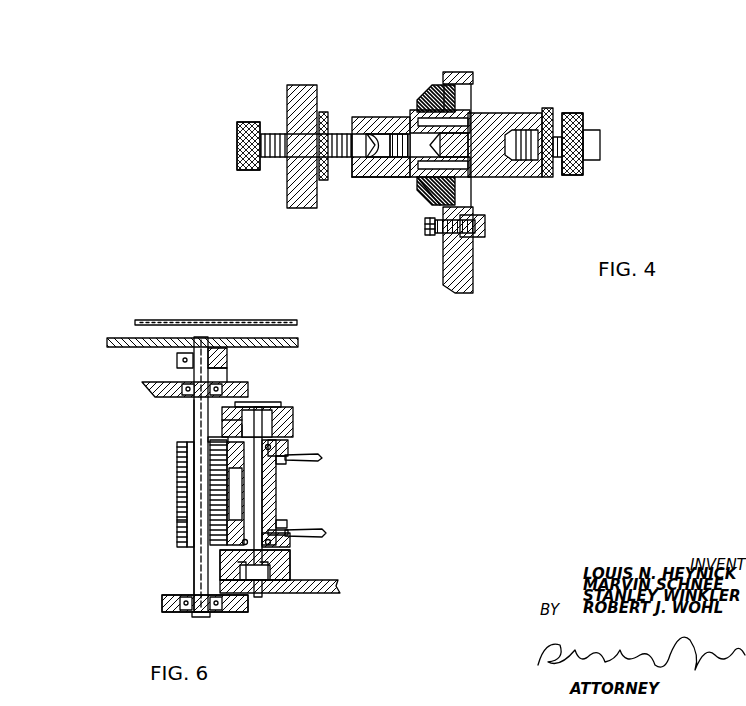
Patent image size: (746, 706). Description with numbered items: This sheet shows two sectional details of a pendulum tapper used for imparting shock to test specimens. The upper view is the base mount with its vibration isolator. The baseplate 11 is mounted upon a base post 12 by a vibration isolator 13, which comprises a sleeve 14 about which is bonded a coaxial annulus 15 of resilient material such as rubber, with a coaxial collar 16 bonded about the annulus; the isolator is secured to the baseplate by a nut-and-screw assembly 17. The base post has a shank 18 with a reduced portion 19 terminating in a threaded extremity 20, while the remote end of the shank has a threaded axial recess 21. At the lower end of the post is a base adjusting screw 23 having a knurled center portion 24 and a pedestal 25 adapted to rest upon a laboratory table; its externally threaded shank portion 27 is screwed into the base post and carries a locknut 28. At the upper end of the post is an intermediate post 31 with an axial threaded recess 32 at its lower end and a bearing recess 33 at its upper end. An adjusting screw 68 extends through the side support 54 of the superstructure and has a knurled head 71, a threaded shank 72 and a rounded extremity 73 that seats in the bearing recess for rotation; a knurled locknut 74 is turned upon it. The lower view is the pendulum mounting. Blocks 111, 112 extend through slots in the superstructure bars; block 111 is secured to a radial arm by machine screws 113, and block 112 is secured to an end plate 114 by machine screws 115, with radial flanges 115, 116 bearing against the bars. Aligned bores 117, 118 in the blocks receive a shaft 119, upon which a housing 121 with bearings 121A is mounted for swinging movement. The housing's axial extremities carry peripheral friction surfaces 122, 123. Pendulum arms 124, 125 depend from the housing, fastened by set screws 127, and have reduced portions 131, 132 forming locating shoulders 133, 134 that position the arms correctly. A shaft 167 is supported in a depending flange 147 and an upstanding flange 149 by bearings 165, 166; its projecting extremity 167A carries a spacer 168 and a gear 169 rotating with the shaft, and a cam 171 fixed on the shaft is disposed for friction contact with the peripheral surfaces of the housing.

In FIG. 4, the baseplate 11 is at (458, 284).
In FIG. 4, the base post 12 is at (495, 130).
In FIG. 4, the vibration isolator 13 is at (425, 110).
In FIG. 4, the sleeve 14 is at (412, 125).
In FIG. 4, the annulus 15 is at (428, 200).
In FIG. 4, the collar 16 is at (432, 87).
In FIG. 4, the nut-and-screw assembly 17 is at (430, 236).
In FIG. 4, the shank 18 is at (545, 115).
In FIG. 4, the reduced portion 19 is at (478, 110).
In FIG. 4, the threaded extremity 20 is at (398, 158).
In FIG. 4, the threaded axial recess 21 is at (518, 172).
In FIG. 4, the base adjusting screw 23 is at (572, 176).
In FIG. 4, the knurled center portion 24 is at (583, 115).
In FIG. 4, the pedestal 25 is at (602, 145).
In FIG. 4, the shank portion 27 is at (532, 175).
In FIG. 4, the locknut 28 is at (568, 112).
In FIG. 4, the intermediate post 31 is at (372, 178).
In FIG. 4, the axial threaded recess 32 is at (386, 134).
In FIG. 4, the bearing recess 33 is at (352, 165).
In FIG. 4, the side support 54 is at (290, 95).
In FIG. 4, the adjusting screw 68 is at (240, 123).
In FIG. 4, the knurled head 71 is at (238, 145).
In FIG. 4, the threaded shank 72 is at (275, 158).
In FIG. 4, the rounded extremity 73 is at (356, 136).
In FIG. 4, the knurled locknut 74 is at (322, 115).
In FIG. 6, the block 111 is at (223, 570).
In FIG. 6, the block 112 is at (232, 433).
In FIG. 6, the machine screw 113 is at (275, 590).
In FIG. 6, the end plate 114 is at (258, 403).
In FIG. 6, the machine screw / radial flange 115 is at (280, 420).
In FIG. 6, the radial flange 116 is at (225, 437).
In FIG. 6, the bore 117 is at (290, 553).
In FIG. 6, the bore 118 is at (228, 420).
In FIG. 6, the shaft 119 is at (292, 567).
In FIG. 6, the housing 121 is at (230, 488).
In FIG. 6, the bearing 121A is at (285, 437).
In FIG. 6, the peripheral friction surface 122 is at (215, 532).
In FIG. 6, the peripheral friction surface 123 is at (228, 453).
In FIG. 6, the pendulum arm 124 is at (322, 533).
In FIG. 6, the pendulum arm 125 is at (325, 457).
In FIG. 6, the set screw 127 is at (290, 530).
In FIG. 6, the reduced portion 131 is at (282, 520).
In FIG. 6, the reduced portion 132 is at (290, 450).
In FIG. 6, the locating shoulder 133 is at (283, 542).
In FIG. 6, the locating shoulder 134 is at (290, 462).
In FIG. 6, the depending flange 147 is at (238, 597).
In FIG. 6, the upstanding flange 149 is at (150, 390).
In FIG. 6, the bearing 165 is at (178, 608).
In FIG. 6, the bearing 166 is at (232, 380).
In FIG. 6, the shaft 167 is at (197, 505).
In FIG. 6, the projecting extremity 167A is at (203, 325).
In FIG. 6, the spacer 168 is at (185, 374).
In FIG. 6, the gear 169 is at (137, 338).
In FIG. 6, the cam 171 is at (186, 527).